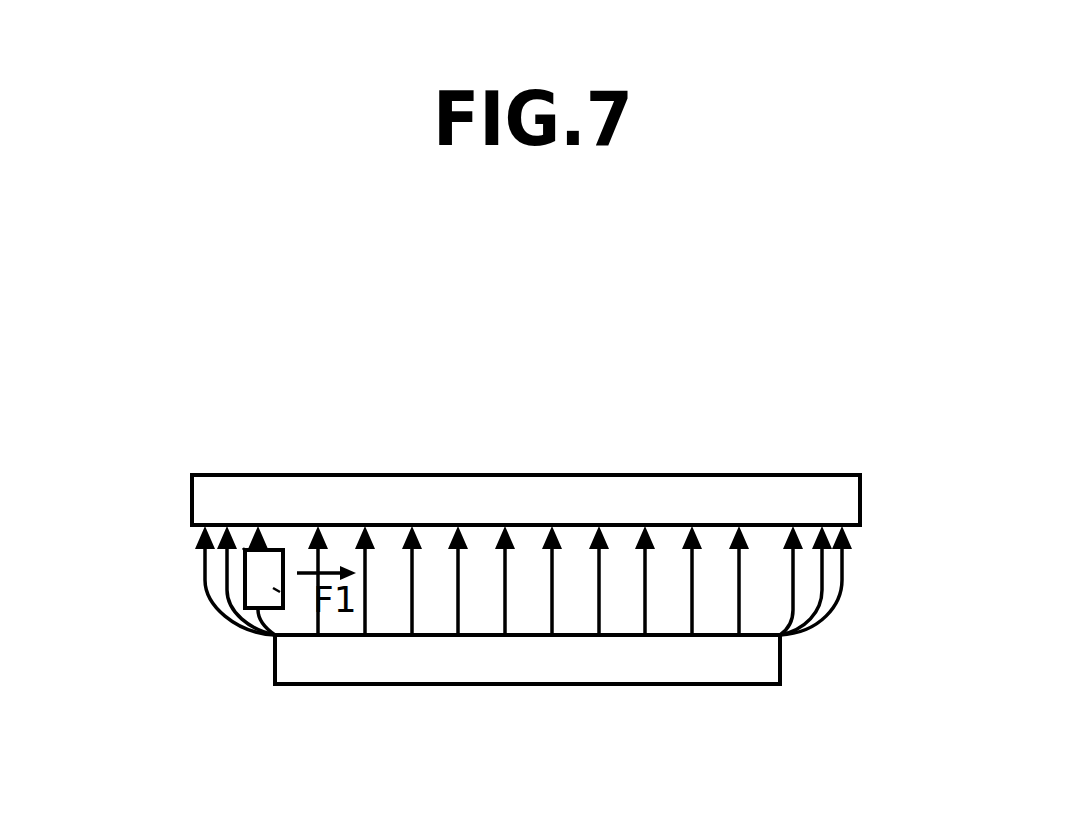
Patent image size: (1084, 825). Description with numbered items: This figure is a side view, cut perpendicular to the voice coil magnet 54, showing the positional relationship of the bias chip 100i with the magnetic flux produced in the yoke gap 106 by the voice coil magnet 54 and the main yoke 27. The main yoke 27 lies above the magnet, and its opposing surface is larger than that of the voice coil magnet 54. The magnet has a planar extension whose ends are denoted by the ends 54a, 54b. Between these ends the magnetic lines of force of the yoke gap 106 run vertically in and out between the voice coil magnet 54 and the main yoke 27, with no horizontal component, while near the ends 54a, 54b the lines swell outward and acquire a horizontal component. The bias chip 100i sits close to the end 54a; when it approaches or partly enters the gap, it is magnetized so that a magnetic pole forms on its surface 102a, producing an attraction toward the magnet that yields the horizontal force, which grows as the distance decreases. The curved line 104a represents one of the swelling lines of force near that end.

The main yoke 27 is at (370, 490).
The voice coil magnet 54 is at (542, 664).
The end of the voice coil magnet 54a is at (272, 655).
The end of the voice coil magnet 54b is at (780, 650).
The surface of the bias chip 102a is at (250, 628).
The magnetic field line 104a is at (243, 548).
The bias chip 100i is at (273, 588).
The yoke gap 106 is at (515, 571).